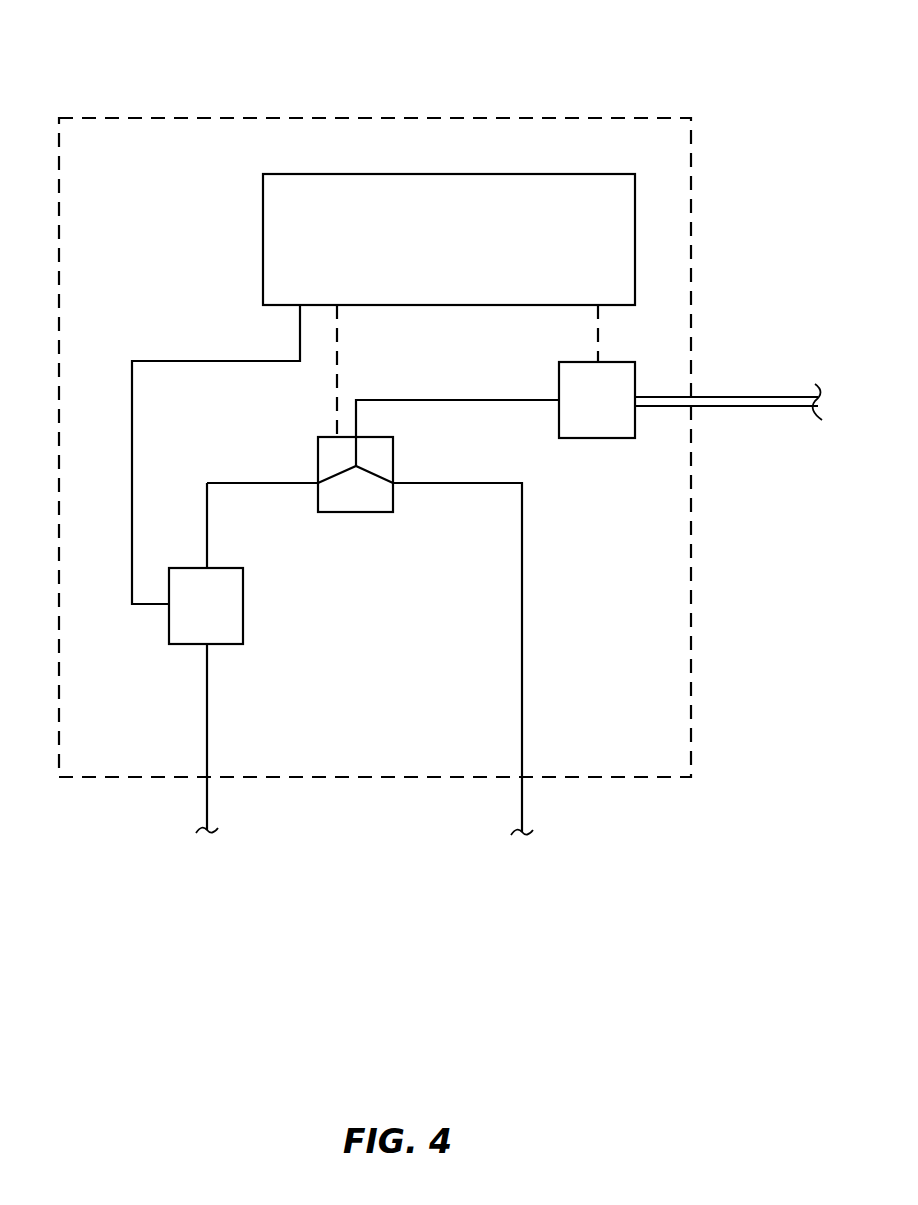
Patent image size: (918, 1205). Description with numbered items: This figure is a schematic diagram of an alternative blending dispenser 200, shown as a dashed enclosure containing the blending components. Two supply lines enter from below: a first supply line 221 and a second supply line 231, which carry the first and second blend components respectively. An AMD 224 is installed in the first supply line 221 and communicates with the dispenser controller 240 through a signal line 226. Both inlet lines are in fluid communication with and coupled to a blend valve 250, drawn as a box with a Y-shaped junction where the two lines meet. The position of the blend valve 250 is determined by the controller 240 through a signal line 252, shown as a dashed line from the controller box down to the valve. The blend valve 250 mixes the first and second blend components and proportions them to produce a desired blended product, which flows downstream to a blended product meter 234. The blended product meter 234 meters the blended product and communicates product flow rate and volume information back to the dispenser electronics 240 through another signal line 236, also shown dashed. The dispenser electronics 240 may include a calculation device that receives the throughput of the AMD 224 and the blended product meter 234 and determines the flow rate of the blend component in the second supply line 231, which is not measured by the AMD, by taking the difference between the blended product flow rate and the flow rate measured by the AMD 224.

The blending dispenser 200 is at (657, 95).
The dispenser controller 240 is at (263, 207).
The signal line 226 is at (171, 361).
The signal line 252 is at (338, 412).
The signal line 236 is at (598, 346).
The blend valve 250 is at (318, 450).
The blended product meter 234 is at (598, 438).
The AMD 224 is at (226, 644).
The first supply line 221 is at (207, 735).
The second supply line 231 is at (522, 737).